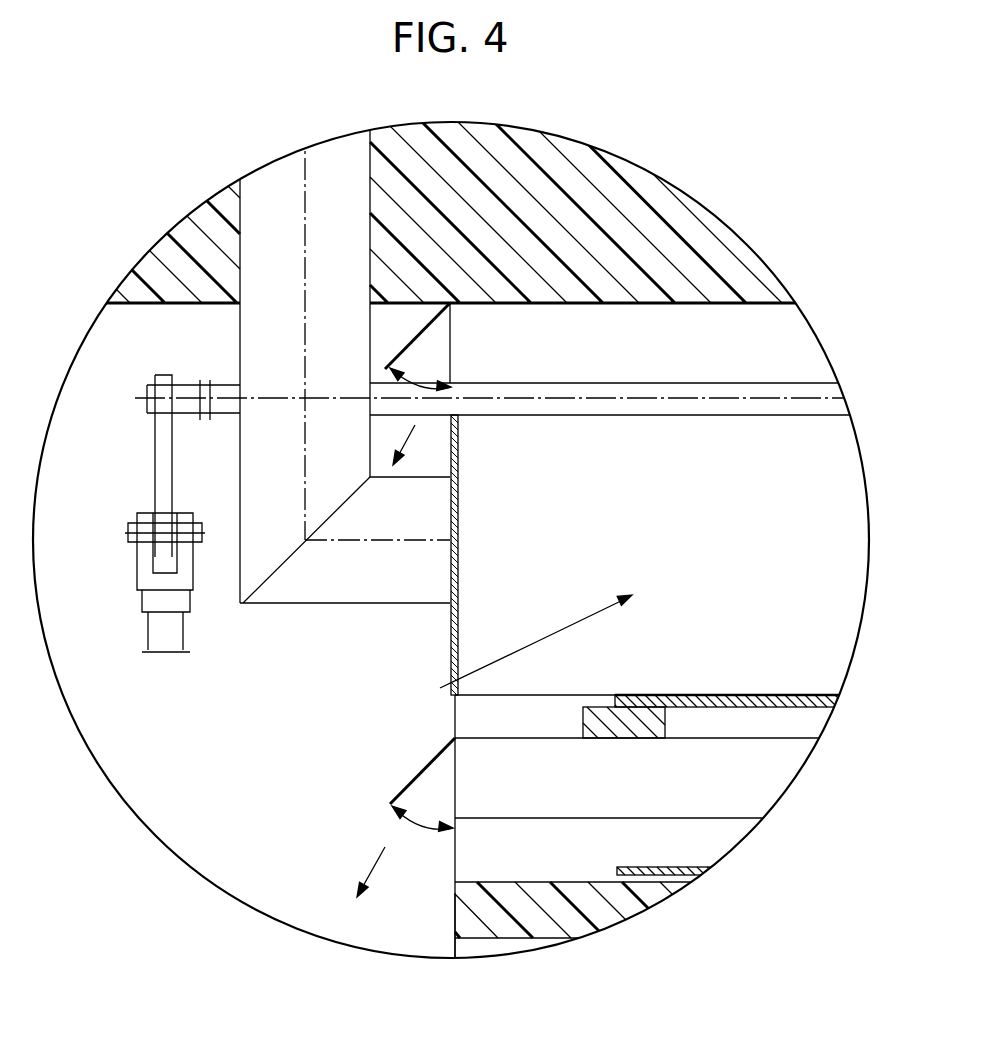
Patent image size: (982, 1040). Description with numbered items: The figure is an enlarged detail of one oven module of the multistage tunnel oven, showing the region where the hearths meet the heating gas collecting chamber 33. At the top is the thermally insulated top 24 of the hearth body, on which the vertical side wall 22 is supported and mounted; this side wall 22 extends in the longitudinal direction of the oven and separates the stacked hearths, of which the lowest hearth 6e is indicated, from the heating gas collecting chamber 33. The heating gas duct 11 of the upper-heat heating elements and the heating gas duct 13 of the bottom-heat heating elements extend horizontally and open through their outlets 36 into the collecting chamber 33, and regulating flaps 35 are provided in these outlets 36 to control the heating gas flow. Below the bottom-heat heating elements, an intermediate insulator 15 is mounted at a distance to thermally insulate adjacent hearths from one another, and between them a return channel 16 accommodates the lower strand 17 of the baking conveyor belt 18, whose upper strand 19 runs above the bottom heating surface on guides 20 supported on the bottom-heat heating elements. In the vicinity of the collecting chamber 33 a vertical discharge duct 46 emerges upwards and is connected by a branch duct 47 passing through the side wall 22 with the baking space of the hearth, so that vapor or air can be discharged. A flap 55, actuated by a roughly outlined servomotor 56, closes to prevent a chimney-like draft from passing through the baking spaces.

The discharge duct 46 is at (325, 205).
The top of the hearth body 24 is at (572, 162).
The regulating flap 35 is at (417, 340).
The outlet 36 is at (423, 378).
The heating gas duct 11 is at (722, 365).
The servomotor 56 is at (160, 633).
The branch duct 47 is at (352, 578).
The flap 55 is at (458, 633).
The hearth 6e is at (456, 682).
The baking conveyor belt 18 is at (695, 695).
The upper strand 19 is at (780, 700).
The guide 20 is at (622, 738).
The heating gas duct 13 is at (719, 801).
The heating gas collecting chamber 33 is at (216, 775).
The return channel 16 is at (492, 870).
The lower strand 17 is at (658, 867).
The side wall 22 is at (453, 893).
The intermediate insulator 15 is at (598, 913).